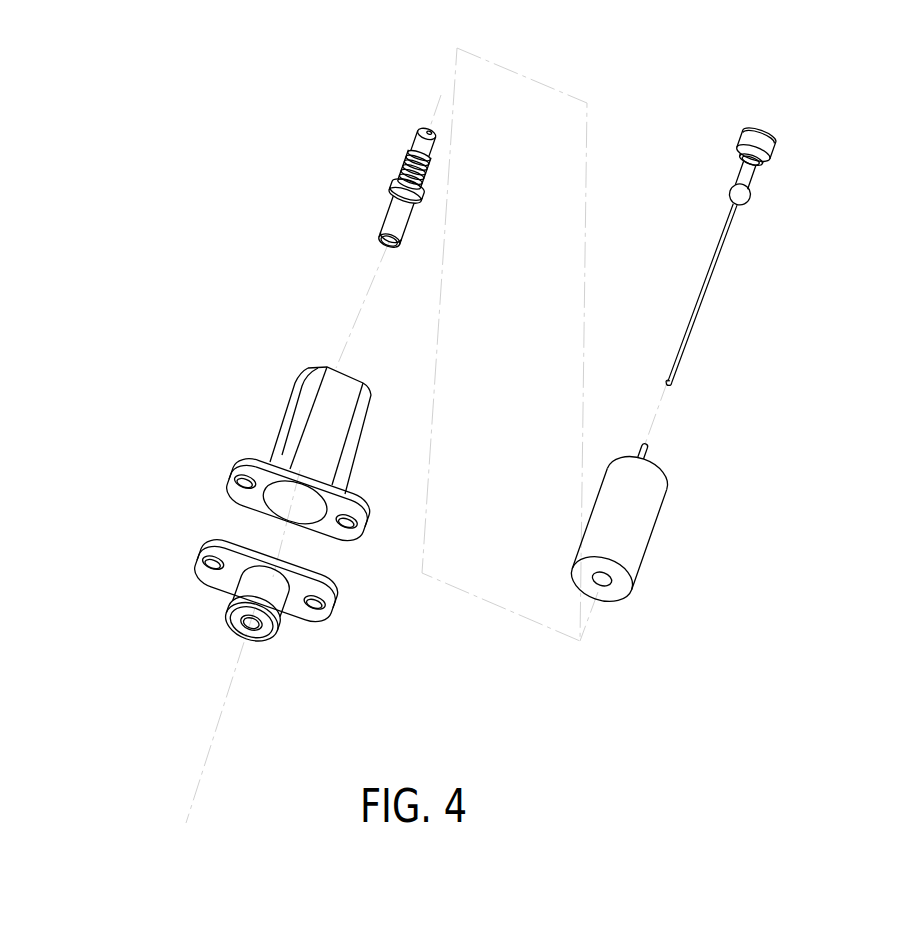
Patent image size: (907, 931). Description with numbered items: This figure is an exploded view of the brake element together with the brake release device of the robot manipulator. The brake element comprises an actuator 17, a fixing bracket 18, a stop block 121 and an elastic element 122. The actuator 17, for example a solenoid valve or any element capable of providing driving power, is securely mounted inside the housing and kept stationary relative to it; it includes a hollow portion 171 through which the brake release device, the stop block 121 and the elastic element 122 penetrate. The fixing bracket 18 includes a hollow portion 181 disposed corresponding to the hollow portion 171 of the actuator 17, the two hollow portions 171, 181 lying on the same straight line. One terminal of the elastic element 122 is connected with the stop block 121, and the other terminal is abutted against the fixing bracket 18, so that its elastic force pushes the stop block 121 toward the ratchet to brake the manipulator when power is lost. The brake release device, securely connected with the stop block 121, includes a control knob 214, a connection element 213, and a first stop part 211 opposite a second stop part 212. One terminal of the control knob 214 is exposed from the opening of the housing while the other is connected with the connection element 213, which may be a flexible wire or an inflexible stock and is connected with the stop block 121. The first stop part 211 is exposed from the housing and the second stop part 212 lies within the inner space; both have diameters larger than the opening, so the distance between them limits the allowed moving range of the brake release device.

The stop block 121 is at (436, 199).
The elastic element 122 is at (425, 170).
The actuator 17 is at (655, 541).
The hollow portion 171 is at (605, 583).
The fixing bracket 18 is at (262, 535).
The hollow portion 181 is at (317, 510).
The first stop part 211 is at (769, 148).
The second stop part 212 is at (743, 198).
The connection element 213 is at (712, 292).
The control knob 214 is at (742, 227).